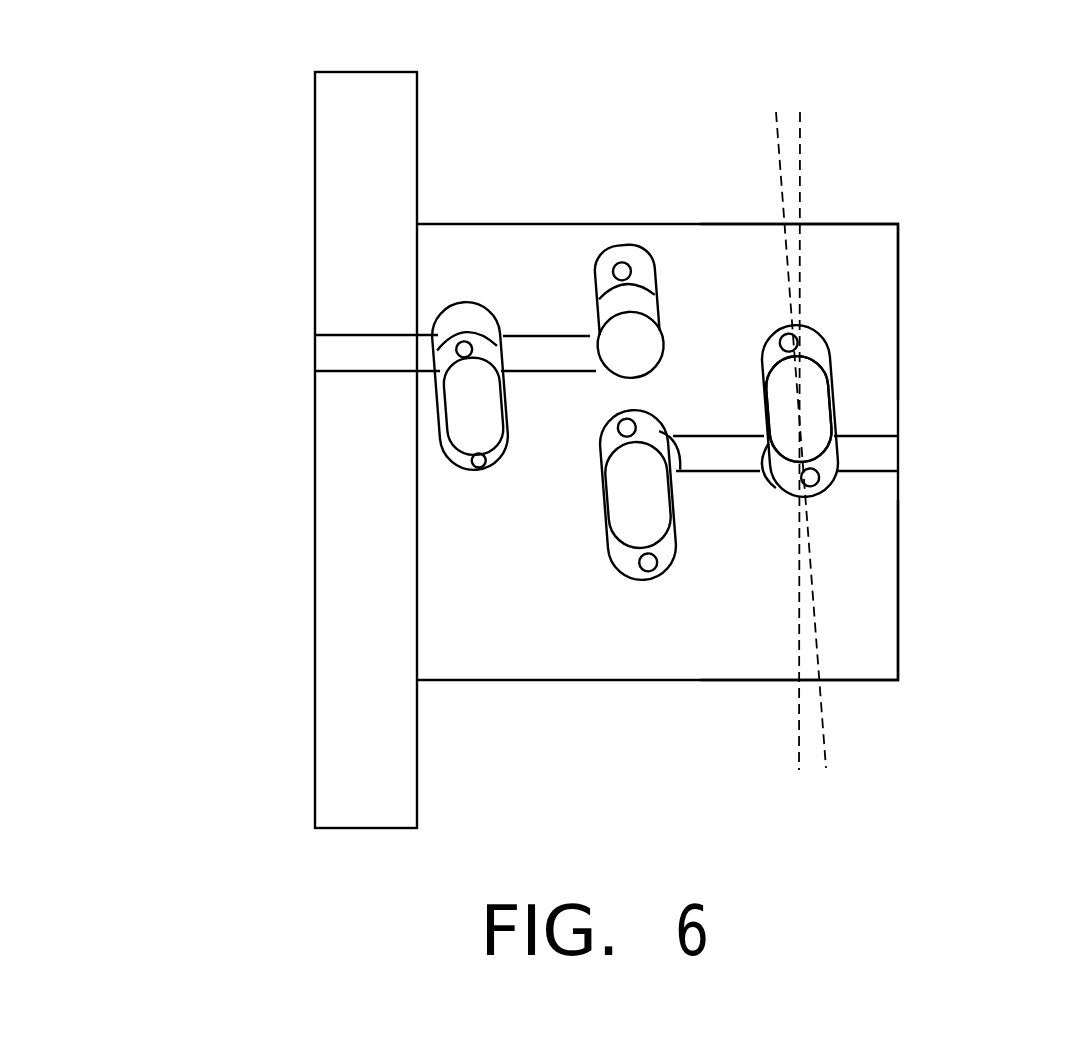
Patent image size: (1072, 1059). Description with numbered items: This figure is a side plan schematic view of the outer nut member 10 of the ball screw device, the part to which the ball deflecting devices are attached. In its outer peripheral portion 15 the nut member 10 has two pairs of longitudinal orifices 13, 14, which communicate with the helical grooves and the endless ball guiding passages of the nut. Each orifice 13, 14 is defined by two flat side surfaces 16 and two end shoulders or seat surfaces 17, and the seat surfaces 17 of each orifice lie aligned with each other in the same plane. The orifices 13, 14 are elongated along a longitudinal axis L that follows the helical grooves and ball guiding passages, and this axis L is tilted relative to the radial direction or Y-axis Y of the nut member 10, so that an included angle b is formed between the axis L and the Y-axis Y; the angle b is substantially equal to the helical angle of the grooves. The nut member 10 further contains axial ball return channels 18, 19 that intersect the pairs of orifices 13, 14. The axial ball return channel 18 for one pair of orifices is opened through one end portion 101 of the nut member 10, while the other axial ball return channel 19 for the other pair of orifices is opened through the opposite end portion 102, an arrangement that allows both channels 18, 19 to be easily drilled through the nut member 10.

The outer nut member 10 is at (571, 682).
The longitudinal orifice 13 is at (632, 517).
The longitudinal orifice 14 is at (780, 378).
The outer peripheral portion 15 is at (899, 222).
The flat side surfaces 16 is at (770, 410).
The seat surfaces 17 is at (485, 355).
The axial ball return channel 18 is at (885, 452).
The axial ball return channel 19 is at (325, 353).
The end portion 101 is at (900, 680).
The end portion 102 is at (314, 758).
The longitudinal axis L is at (773, 148).
The Y-axis Y is at (803, 146).
The included angle b is at (895, 740).